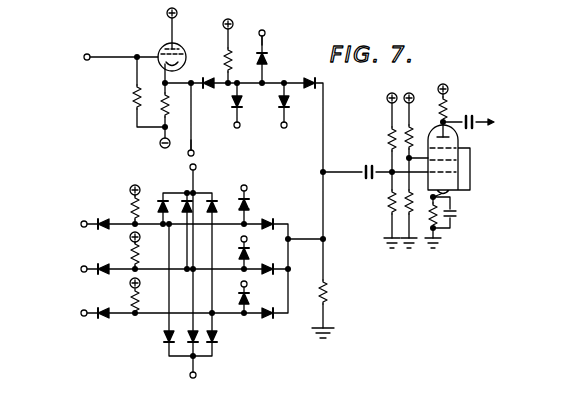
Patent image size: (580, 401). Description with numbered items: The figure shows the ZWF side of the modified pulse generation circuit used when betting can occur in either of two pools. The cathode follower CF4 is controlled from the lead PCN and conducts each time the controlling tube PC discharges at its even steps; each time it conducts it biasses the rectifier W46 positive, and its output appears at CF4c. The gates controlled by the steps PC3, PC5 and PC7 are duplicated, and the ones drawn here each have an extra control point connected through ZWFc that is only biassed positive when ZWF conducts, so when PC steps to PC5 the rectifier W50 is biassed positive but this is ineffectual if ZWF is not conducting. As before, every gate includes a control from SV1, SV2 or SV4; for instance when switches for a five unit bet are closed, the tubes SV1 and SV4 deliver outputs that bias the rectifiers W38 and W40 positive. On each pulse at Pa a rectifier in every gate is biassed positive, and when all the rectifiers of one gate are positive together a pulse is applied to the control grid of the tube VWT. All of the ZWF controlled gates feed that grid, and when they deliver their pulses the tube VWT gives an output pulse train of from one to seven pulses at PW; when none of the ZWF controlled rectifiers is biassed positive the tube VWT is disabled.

The controlling tube output lead PCIV PCN is at (75, 48).
The cathode follower CF4 is at (154, 53).
The rectifier W46 is at (204, 72).
The tube SV4 control SV4 is at (268, 29).
The rectifier W40 is at (283, 54).
The ZWF control ZWF is at (234, 121).
The +Pa pulse input Pa is at (246, 136).
The cathode follower CF4 output connection CF4c is at (210, 151).
The output pulse train PW is at (485, 123).
The output tube VWT is at (471, 159).
The controlling tube step PC5 is at (64, 225).
The rectifier W50 is at (102, 233).
The controlling tube step PC3 is at (74, 270).
The controlling tube step PC7 is at (73, 314).
The tube SV1 control SV1 is at (260, 188).
The rectifier W38 is at (261, 211).
The tube SV2 control SV2 is at (260, 272).
The ZWF control connection ZWFc is at (216, 376).